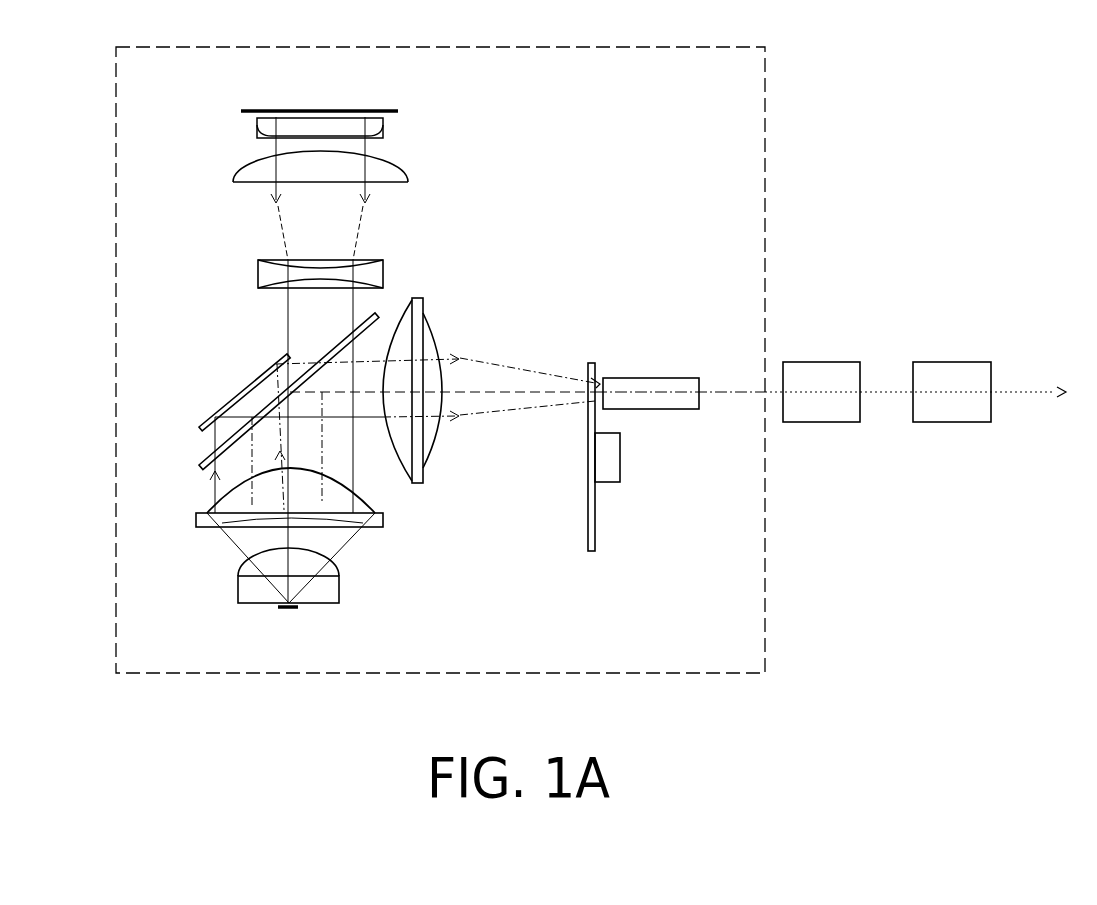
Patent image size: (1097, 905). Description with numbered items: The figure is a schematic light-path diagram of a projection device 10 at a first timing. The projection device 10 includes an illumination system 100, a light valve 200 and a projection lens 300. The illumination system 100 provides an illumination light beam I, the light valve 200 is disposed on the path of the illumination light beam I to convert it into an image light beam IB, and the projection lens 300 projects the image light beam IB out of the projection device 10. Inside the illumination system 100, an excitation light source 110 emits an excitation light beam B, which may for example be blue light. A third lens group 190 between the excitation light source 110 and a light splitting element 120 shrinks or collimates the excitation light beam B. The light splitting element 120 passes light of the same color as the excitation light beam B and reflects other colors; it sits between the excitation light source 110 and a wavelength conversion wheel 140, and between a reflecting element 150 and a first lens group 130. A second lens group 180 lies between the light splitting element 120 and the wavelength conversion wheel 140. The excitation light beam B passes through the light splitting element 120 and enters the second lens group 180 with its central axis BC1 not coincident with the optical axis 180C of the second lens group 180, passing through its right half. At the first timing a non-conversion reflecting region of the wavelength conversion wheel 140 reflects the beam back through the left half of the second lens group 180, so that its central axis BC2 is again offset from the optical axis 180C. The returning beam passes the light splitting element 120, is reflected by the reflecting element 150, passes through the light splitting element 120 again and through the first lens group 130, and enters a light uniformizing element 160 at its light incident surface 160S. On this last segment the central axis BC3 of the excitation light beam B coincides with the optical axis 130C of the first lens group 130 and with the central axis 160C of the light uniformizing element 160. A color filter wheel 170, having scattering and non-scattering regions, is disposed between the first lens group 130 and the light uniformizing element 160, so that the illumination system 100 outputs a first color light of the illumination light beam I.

The projection device 10 is at (1002, 649).
The illumination system 100 is at (768, 73).
The excitation light source 110 is at (398, 110).
The excitation light beam B is at (366, 146).
The third lens group 190 is at (265, 272).
The reflecting element 150 is at (216, 408).
The light splitting element 120 is at (209, 446).
The central axis BC1 is at (323, 465).
The central axis BC2 is at (252, 470).
The first lens group 130 is at (420, 298).
The optical axis 130C is at (442, 364).
The central axis BC3 is at (505, 373).
The second lens group 180 is at (333, 592).
The optical axis 180C is at (280, 532).
The wavelength conversion wheel 140 is at (289, 609).
The color filter wheel 170 is at (591, 553).
The light uniformizing element 160 is at (673, 380).
The light incident surface 160S is at (599, 378).
The central axis 160C is at (648, 390).
The light valve 200 is at (820, 424).
The projection lens 300 is at (951, 424).
The illumination light beam I is at (772, 390).
The image light beam IB is at (1005, 392).